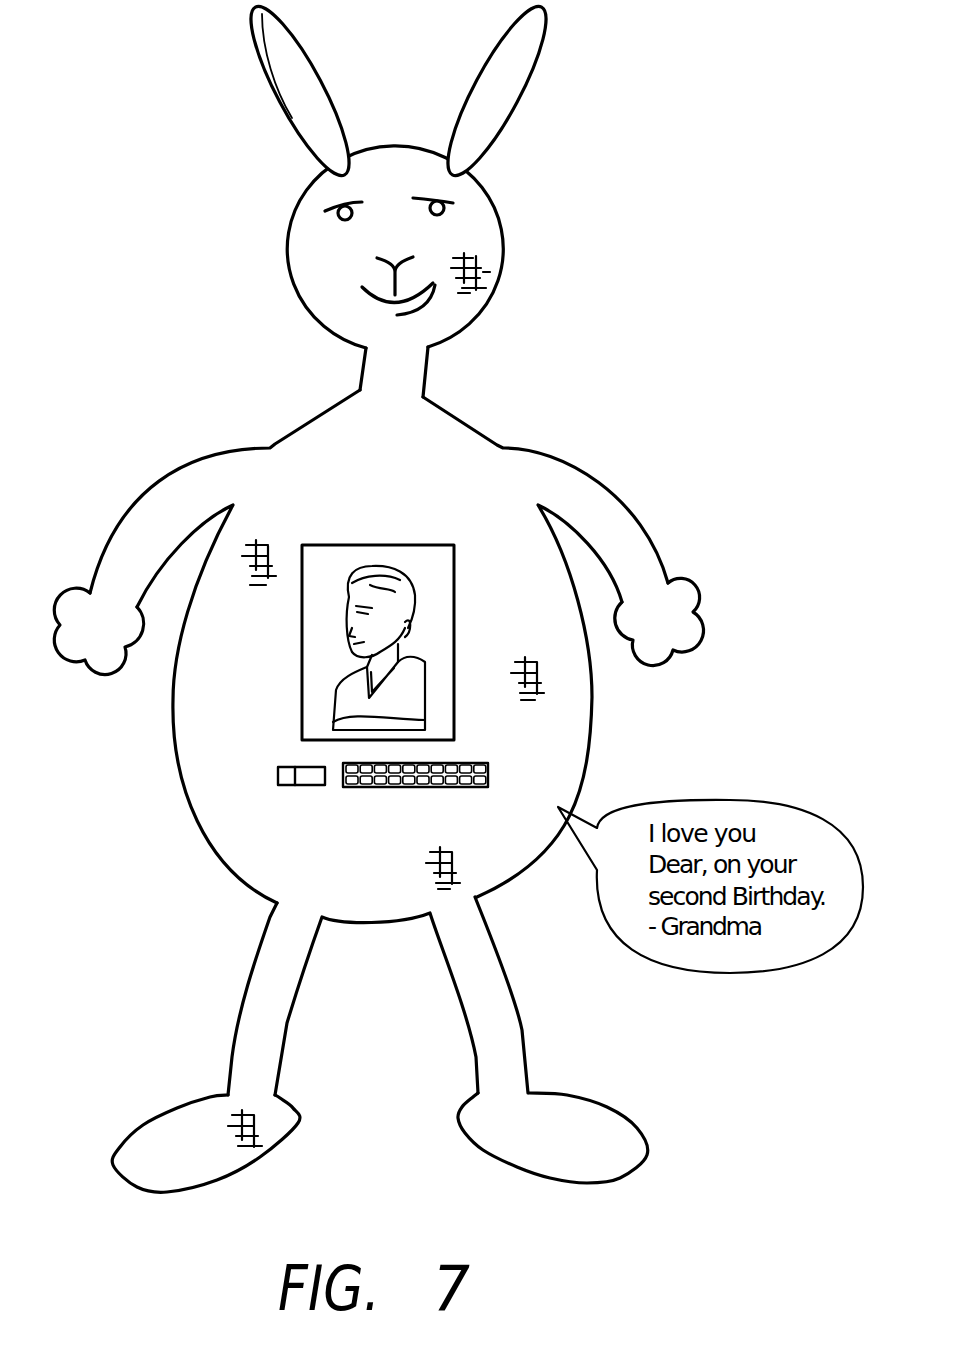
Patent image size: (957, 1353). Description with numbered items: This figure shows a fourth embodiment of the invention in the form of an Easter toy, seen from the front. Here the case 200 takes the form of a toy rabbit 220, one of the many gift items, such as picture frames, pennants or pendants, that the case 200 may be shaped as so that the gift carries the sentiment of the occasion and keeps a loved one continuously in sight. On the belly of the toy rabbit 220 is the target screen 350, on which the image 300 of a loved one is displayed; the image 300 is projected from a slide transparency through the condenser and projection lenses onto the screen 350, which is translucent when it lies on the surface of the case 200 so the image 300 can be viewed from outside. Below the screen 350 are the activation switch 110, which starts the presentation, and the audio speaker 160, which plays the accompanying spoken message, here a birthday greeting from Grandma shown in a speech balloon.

The activation switch 110 is at (277, 778).
The audio speaker 160 is at (490, 777).
The case 200 is at (450, 407).
The toy rabbit 220 is at (378, 750).
The image 300 is at (413, 608).
The target screen 350 is at (455, 725).